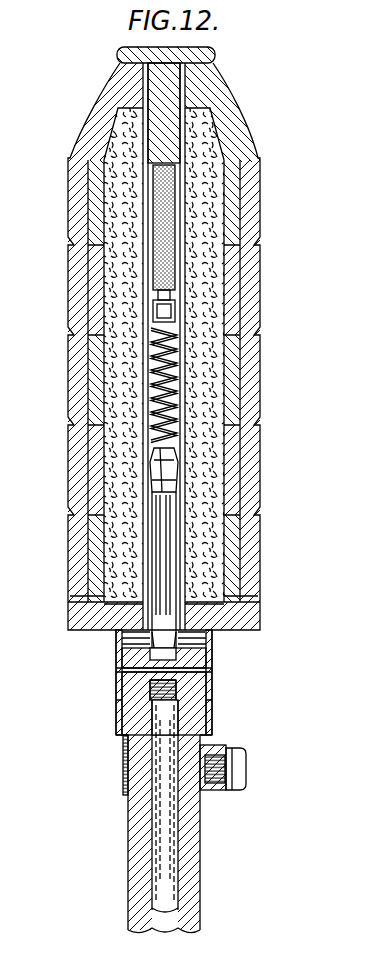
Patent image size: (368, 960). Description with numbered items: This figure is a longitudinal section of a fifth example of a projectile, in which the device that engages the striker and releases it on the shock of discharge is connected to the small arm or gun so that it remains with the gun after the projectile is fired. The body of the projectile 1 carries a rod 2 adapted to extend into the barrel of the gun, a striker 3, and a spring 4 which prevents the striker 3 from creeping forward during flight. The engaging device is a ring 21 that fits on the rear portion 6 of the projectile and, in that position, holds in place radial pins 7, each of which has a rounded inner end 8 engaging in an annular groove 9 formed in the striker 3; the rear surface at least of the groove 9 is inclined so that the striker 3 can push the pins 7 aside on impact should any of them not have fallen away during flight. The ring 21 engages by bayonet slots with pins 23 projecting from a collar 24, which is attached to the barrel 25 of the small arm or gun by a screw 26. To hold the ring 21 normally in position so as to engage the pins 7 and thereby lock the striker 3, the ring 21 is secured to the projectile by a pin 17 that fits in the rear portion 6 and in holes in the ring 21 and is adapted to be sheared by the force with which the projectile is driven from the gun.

The body of the projectile 1 is at (260, 360).
The rod 2 is at (170, 856).
The striker 3 is at (168, 527).
The spring 4 is at (150, 378).
The rear portion of the projectile 6 is at (212, 692).
The radial pins 7 is at (118, 636).
The rounded inner end 8 is at (132, 600).
The annular groove 9 is at (74, 598).
The pin 17 is at (212, 672).
The ring 21 is at (118, 684).
The pins 23 is at (117, 714).
The collar 24 is at (123, 772).
The barrel 25 is at (192, 822).
The screw 26 is at (246, 770).